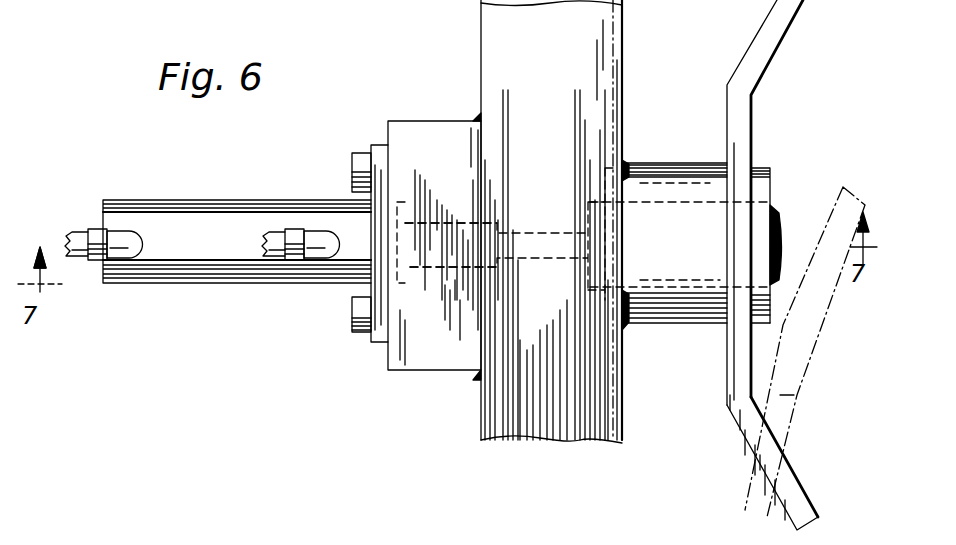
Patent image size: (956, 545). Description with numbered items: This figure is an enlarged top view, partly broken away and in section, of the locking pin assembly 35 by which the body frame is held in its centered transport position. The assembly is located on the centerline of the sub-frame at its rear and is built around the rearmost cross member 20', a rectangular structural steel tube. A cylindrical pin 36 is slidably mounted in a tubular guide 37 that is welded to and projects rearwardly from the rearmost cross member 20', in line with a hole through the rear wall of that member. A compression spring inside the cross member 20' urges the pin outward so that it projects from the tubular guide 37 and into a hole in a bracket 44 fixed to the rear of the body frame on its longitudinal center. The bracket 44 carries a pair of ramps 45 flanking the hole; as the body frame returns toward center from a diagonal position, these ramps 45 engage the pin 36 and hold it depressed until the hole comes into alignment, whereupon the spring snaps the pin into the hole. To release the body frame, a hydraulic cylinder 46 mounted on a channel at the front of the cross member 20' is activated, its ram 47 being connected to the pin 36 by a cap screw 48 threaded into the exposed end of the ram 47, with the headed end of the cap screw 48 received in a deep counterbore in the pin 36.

The rearmost cross member 20' is at (583, 221).
The locking pin assembly 35 is at (425, 70).
The cylindrical pin 36 is at (665, 212).
The tubular guide 37 is at (703, 302).
The bracket 44 is at (786, 59).
The ramps 45 is at (743, 78).
The hydraulic cylinder 46 is at (232, 284).
The ram 47 is at (494, 231).
The cap screw 48 is at (535, 248).